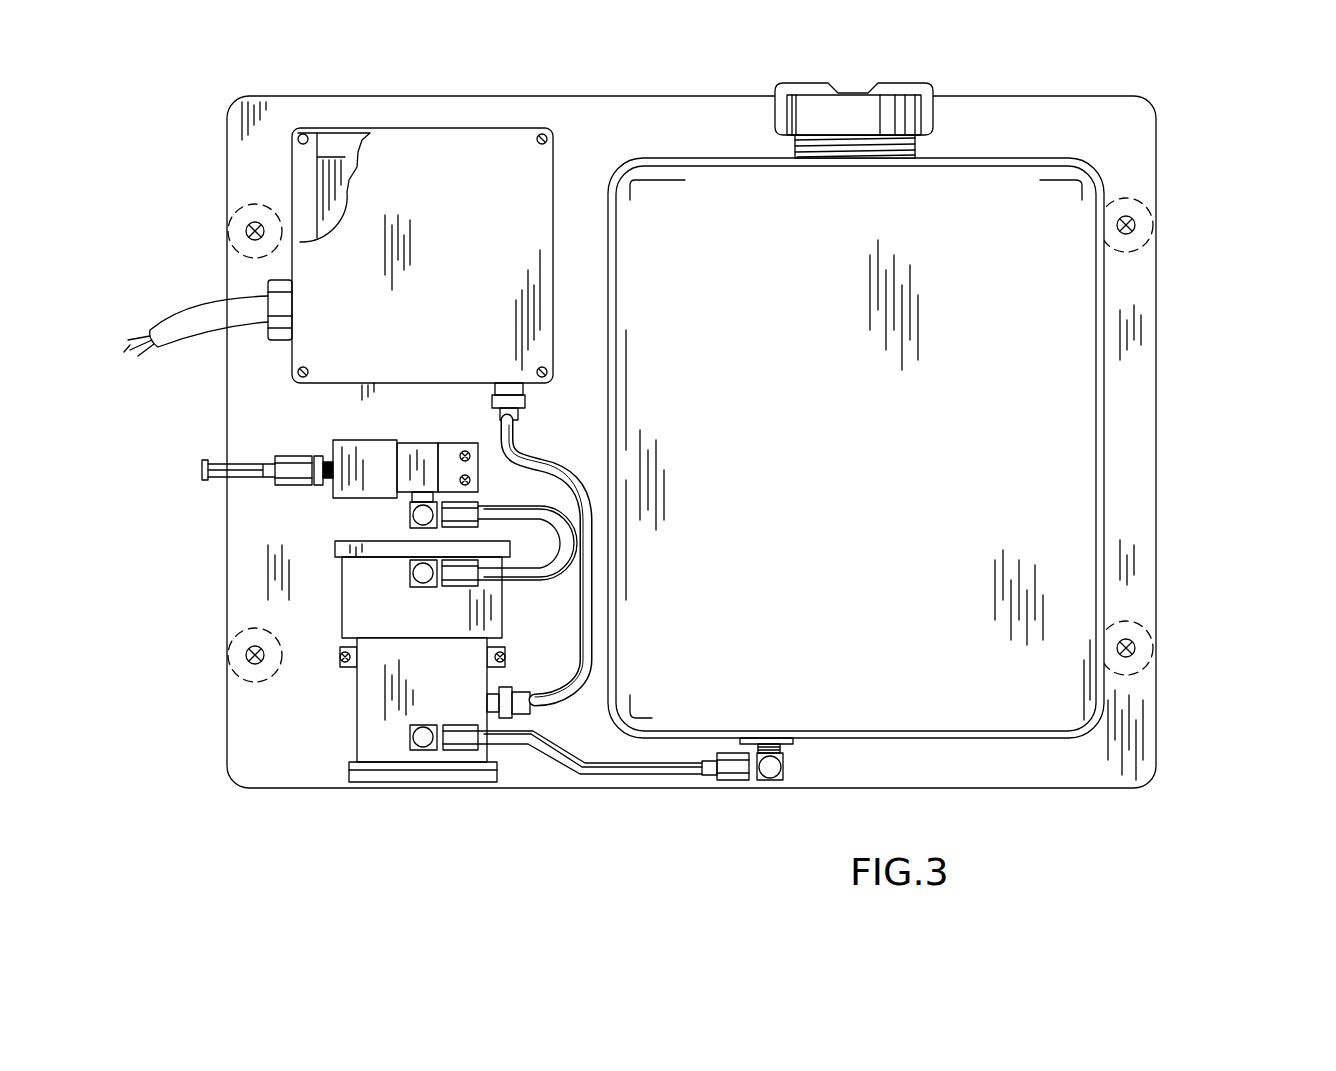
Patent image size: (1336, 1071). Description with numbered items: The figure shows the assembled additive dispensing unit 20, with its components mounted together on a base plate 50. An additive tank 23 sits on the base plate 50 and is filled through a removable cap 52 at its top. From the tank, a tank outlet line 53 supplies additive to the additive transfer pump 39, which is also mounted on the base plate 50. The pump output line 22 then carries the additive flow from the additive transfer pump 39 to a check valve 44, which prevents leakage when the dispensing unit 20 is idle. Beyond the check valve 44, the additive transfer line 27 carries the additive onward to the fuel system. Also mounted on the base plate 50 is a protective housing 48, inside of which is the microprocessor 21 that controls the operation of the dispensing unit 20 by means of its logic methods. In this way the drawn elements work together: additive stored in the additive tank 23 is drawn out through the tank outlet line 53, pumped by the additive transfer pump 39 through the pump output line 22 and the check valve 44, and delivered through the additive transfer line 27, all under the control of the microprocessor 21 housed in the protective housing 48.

The additive dispensing unit 20 is at (1200, 812).
The microprocessor 21 is at (345, 158).
The pump output line 22 is at (513, 582).
The additive tank 23 is at (1045, 158).
The additive transfer line 27 is at (218, 462).
The additive transfer pump 39 is at (352, 700).
The check valve 44 is at (340, 440).
The protective housing 48 is at (482, 128).
The base plate 50 is at (698, 97).
The removable cap 52 is at (902, 83).
The tank outlet line 53 is at (607, 777).